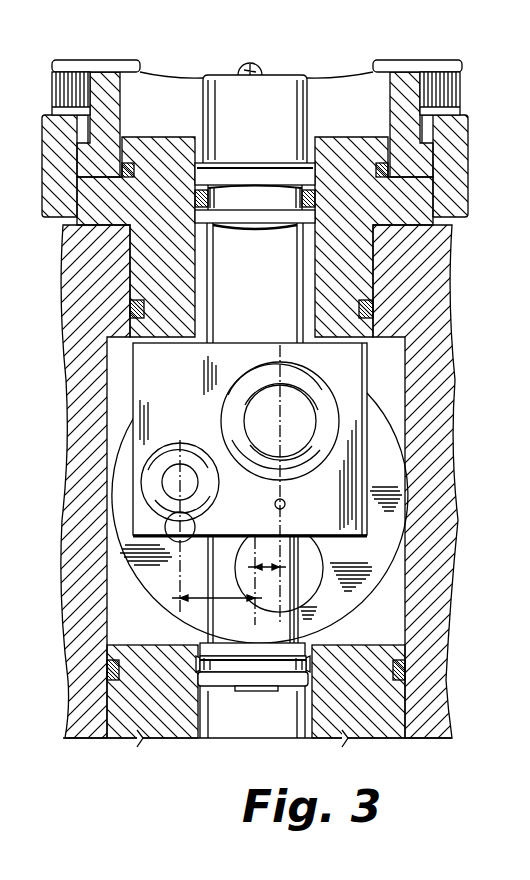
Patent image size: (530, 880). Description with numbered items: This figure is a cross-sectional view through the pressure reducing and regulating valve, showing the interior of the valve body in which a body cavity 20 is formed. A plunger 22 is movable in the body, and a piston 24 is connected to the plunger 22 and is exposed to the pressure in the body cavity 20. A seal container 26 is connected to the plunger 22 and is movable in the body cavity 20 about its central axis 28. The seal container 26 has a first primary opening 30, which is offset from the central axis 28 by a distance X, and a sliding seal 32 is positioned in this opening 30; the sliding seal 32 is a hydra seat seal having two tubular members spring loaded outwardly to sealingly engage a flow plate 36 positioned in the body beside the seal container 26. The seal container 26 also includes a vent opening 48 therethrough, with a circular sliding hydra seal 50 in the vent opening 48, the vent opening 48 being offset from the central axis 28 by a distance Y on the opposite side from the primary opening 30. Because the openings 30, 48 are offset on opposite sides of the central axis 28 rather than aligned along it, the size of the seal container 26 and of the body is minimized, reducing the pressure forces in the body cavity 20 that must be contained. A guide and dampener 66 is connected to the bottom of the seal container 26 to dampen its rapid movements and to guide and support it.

The body cavity 20 is at (305, 290).
The plunger 22 is at (295, 263).
The piston 24 is at (312, 173).
The seal container 26 is at (352, 482).
The central axis 28 is at (251, 310).
The first primary opening 30 is at (305, 420).
The sliding seal 32 is at (312, 385).
The flow plate 36 is at (350, 588).
The vent opening 48 is at (175, 487).
The circular sliding hydra seal 50 is at (147, 477).
The guide and dampener 66 is at (236, 667).
The offset distance of primary opening X is at (272, 556).
The offset distance of vent opening Y is at (157, 573).